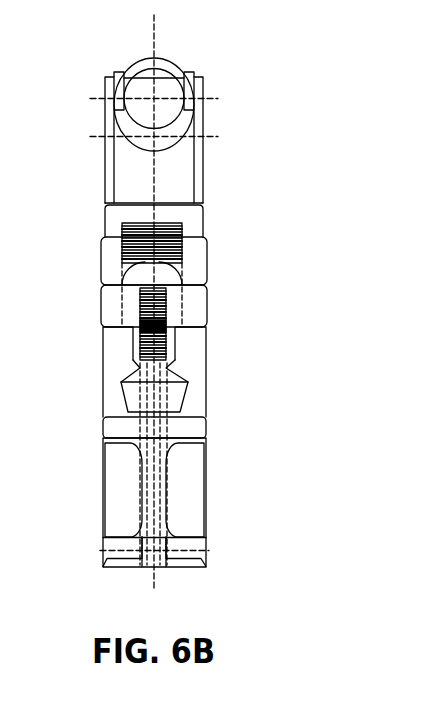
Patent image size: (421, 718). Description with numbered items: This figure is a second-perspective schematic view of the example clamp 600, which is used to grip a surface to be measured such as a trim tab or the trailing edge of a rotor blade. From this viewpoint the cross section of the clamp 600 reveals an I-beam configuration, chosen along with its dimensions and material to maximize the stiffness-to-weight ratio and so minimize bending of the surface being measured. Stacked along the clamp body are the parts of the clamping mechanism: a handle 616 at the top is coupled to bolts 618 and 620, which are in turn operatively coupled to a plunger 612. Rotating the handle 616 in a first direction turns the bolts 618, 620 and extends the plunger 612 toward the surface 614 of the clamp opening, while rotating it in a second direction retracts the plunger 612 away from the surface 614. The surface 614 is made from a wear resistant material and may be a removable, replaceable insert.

The clamp 600 is at (103, 503).
The plunger 612 is at (121, 377).
The surface 614 is at (206, 418).
The handle 616 is at (135, 64).
The bolt 618 is at (183, 248).
The bolt 620 is at (166, 303).